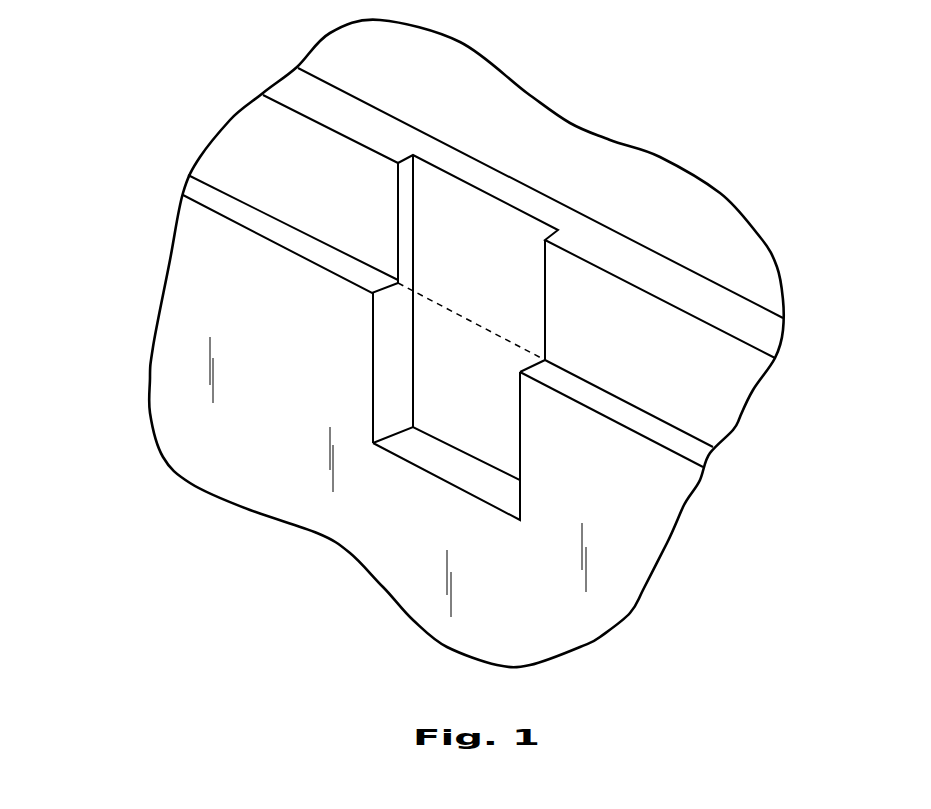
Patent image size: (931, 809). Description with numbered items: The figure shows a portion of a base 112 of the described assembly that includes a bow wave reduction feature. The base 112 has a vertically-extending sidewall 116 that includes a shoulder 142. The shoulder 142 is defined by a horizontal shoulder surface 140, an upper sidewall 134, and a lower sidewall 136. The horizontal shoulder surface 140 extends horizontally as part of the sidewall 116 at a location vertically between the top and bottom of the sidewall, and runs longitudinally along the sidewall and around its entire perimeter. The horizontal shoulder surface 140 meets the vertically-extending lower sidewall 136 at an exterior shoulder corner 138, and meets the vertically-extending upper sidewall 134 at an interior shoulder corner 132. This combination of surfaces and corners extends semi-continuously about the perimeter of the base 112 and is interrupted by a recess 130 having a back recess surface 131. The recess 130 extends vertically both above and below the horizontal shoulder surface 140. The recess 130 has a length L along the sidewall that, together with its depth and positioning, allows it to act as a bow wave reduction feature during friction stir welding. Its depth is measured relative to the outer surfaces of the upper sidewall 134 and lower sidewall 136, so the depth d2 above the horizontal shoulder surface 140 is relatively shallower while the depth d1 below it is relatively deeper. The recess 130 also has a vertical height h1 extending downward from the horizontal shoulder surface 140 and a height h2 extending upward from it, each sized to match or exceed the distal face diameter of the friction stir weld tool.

The base 112 is at (278, 447).
The vertically-extending sidewall 116 is at (245, 293).
The recess 130 is at (463, 403).
The back recess surface 131 is at (530, 327).
The interior shoulder corner 132 is at (645, 410).
The upper sidewall 134 is at (287, 180).
The lower sidewall 136 is at (282, 376).
The exterior shoulder corner 138 is at (602, 417).
The horizontal shoulder surface 140 is at (218, 202).
The shoulder 142 is at (173, 183).
The depth of recess below horizontal shoulder surface d1 is at (375, 367).
The depth of recess above horizontal shoulder surface d2 is at (400, 183).
The height of recess below horizontal shoulder surface h1 is at (497, 340).
The height of recess above horizontal shoulder surface h2 is at (488, 327).
The length of recess L is at (545, 305).